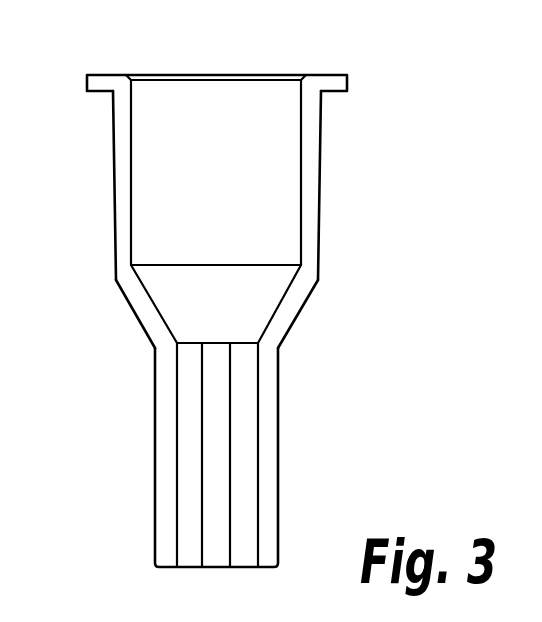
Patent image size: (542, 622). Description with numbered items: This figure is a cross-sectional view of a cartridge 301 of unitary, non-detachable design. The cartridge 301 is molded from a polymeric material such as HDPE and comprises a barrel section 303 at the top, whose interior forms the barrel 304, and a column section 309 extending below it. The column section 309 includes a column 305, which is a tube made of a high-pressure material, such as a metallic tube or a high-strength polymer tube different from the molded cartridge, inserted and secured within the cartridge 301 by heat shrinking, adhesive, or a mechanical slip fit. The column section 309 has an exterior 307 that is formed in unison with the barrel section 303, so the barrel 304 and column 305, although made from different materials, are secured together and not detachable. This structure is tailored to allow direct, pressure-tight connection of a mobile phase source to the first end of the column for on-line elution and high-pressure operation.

The cartridge 301 is at (210, 88).
The barrel section 303 is at (360, 75).
The barrel 304 is at (173, 175).
The column 305 is at (183, 447).
The exterior 307 is at (142, 300).
The column section 309 is at (297, 350).